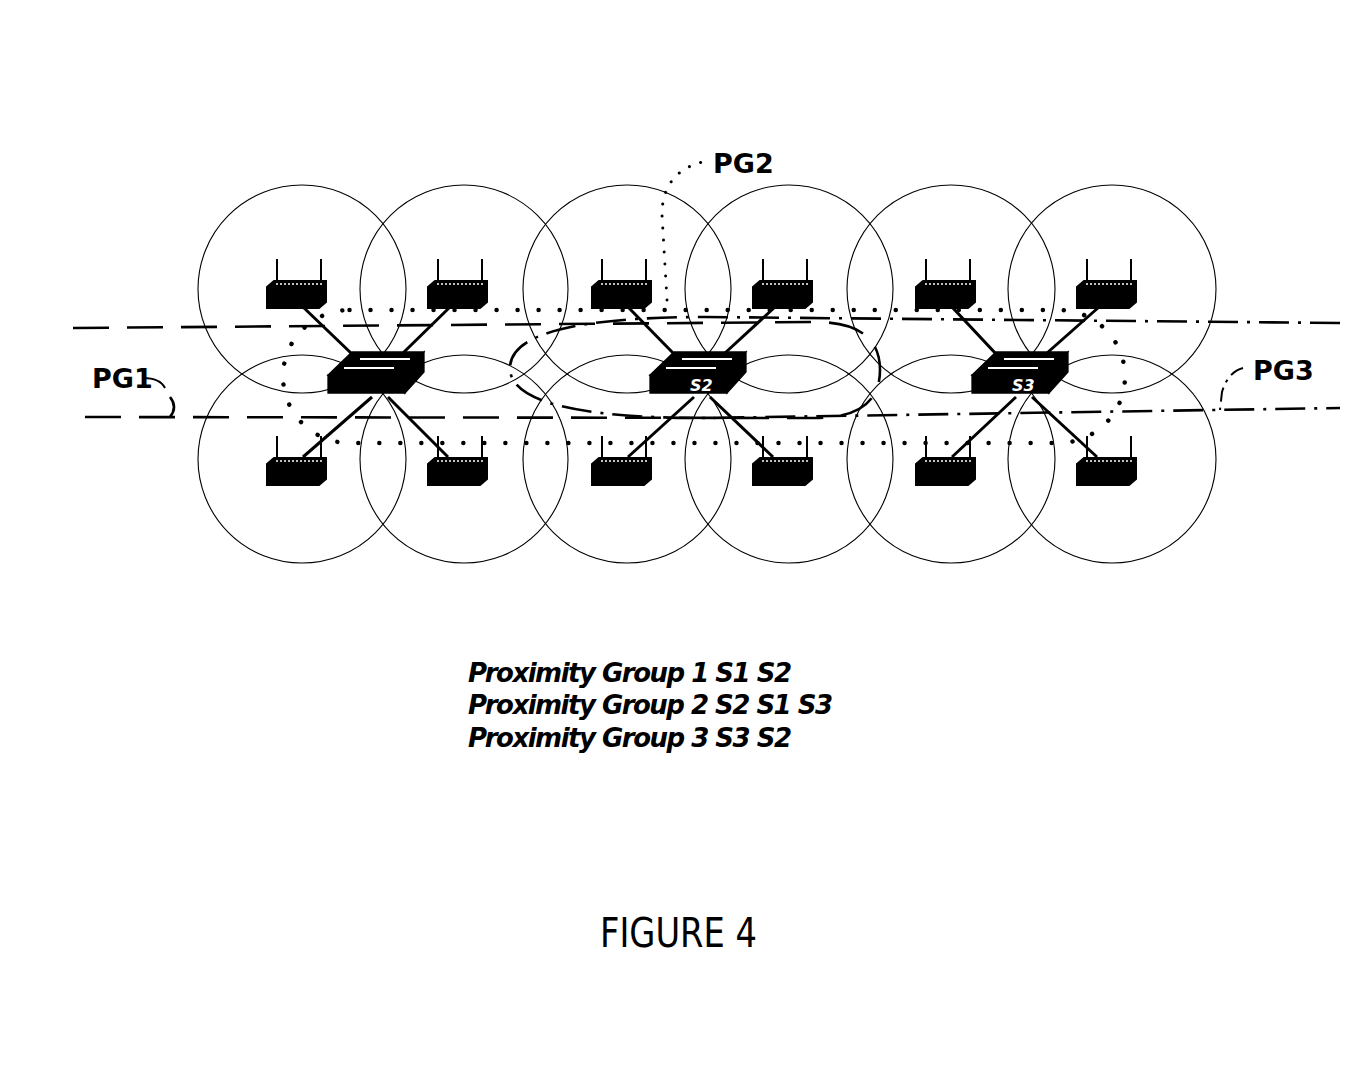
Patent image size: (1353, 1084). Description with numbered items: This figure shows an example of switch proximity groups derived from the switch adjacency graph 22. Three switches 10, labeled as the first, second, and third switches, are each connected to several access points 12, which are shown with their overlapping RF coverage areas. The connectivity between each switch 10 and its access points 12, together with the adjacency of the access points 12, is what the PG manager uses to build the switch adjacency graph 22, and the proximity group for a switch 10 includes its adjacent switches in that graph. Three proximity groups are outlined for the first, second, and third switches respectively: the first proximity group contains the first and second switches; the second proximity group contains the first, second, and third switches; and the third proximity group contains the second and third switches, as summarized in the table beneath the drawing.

The switch adjacency graph 22 is at (987, 113).
The switch 10 is at (330, 374).
The access point 12 is at (622, 485).